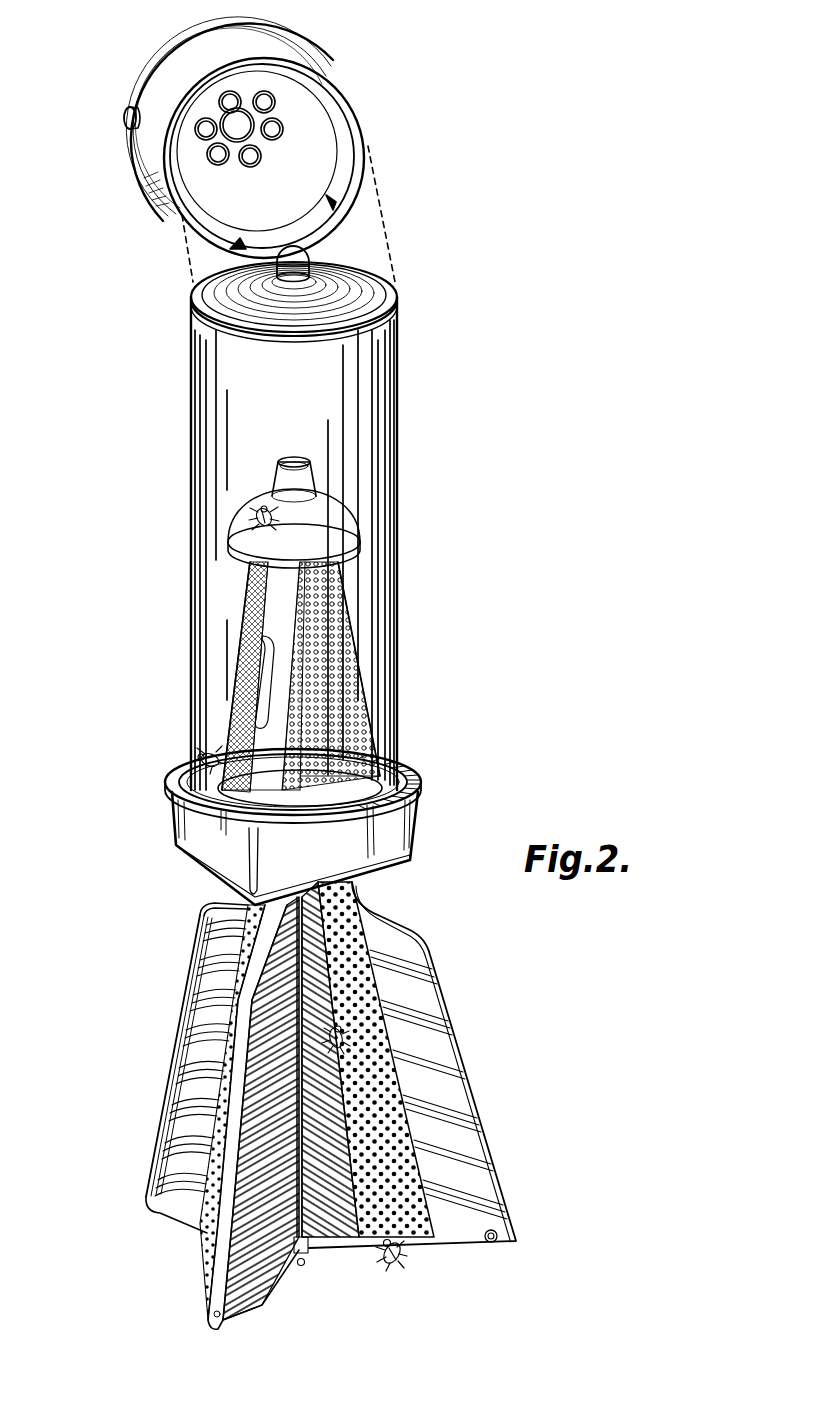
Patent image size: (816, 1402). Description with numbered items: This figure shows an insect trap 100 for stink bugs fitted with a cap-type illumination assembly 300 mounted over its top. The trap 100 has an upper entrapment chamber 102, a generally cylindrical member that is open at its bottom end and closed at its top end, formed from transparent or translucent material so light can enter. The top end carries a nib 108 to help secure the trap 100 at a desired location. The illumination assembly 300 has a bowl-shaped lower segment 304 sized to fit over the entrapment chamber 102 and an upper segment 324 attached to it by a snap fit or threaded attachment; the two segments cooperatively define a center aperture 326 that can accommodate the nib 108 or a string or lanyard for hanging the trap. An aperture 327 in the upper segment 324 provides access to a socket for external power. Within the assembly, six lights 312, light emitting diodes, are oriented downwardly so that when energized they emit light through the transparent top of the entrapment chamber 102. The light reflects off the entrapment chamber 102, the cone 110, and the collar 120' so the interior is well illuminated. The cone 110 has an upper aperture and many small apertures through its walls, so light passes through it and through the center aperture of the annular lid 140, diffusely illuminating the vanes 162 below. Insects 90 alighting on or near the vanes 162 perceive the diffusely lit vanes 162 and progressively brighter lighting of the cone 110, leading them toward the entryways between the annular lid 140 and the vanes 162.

The cap-type illumination assembly 300 is at (243, 142).
The lower segment 304 is at (212, 68).
The upper segment 324 is at (157, 84).
The aperture 327 is at (124, 115).
The center aperture 326 is at (254, 128).
The lights 312 is at (266, 100).
The nib 108 is at (308, 250).
The upper entrapment chamber 102 is at (401, 430).
The collar 120' is at (346, 512).
The insect trap 100 is at (400, 557).
The cone 110 is at (370, 670).
The annular lid 140 is at (412, 848).
The vanes 162 is at (172, 1050).
The insects 90 is at (398, 1262).